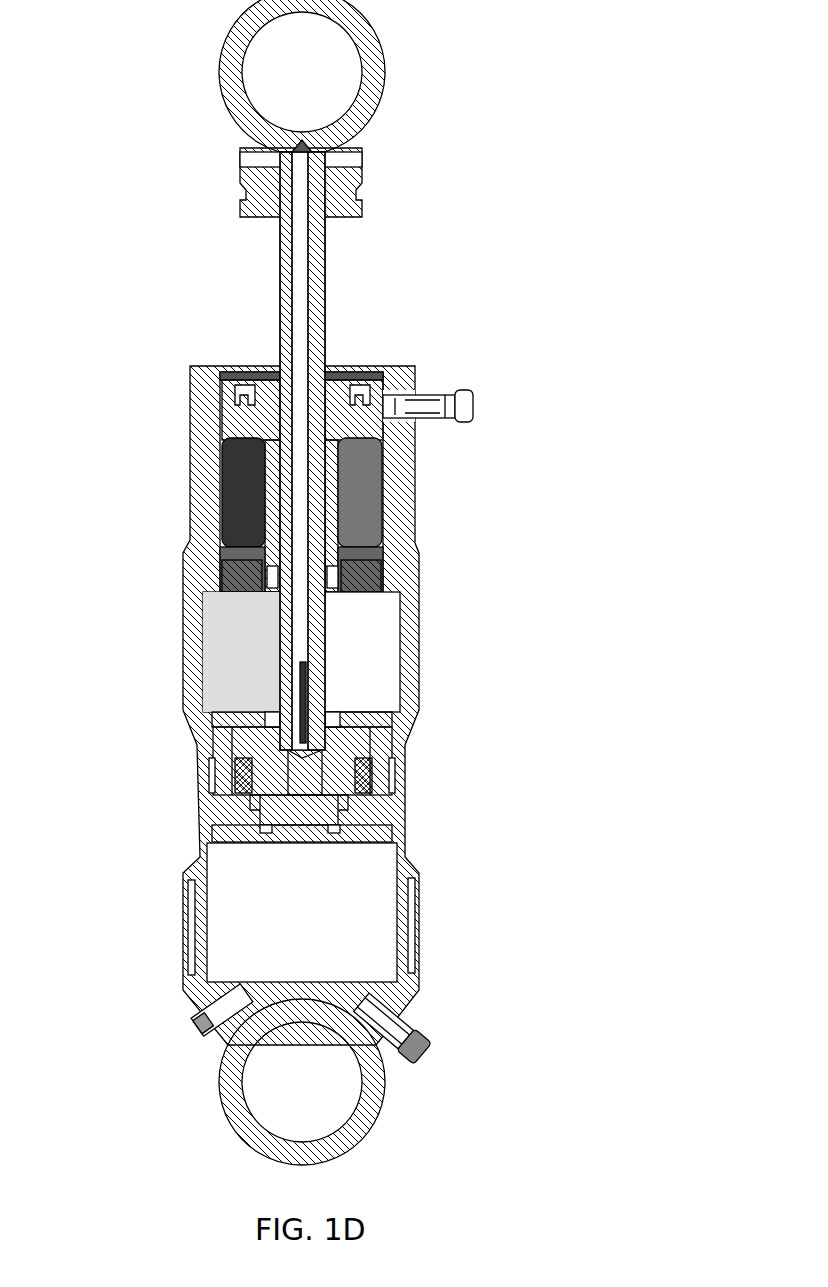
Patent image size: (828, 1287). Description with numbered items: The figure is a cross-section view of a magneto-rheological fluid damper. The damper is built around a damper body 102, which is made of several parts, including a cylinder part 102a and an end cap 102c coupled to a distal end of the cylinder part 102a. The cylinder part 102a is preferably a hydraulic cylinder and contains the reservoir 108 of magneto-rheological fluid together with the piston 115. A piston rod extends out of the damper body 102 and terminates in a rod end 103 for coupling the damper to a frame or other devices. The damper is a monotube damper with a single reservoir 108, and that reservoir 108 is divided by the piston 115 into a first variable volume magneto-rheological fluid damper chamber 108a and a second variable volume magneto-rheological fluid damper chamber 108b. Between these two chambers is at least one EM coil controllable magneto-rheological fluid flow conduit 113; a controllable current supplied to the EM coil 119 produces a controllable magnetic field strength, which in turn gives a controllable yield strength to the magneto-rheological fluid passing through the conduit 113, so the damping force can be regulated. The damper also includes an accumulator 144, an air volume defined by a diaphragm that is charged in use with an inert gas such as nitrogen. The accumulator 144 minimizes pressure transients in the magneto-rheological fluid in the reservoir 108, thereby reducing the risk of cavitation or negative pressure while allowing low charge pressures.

The damper body 102 is at (285, 765).
The cylinder part 102a is at (190, 493).
The end cap 102c is at (417, 942).
The rod end 103 is at (385, 83).
The reservoir 108 is at (297, 652).
The first variable volume magneto-rheological fluid damper chamber 108a is at (252, 903).
The second variable volume magneto-rheological fluid damper chamber 108b is at (240, 660).
The EM coil controllable magneto-rheological fluid flow conduit 113 is at (203, 727).
The piston 115 is at (395, 748).
The EM coil 119 is at (227, 772).
The accumulator 144 is at (452, 424).